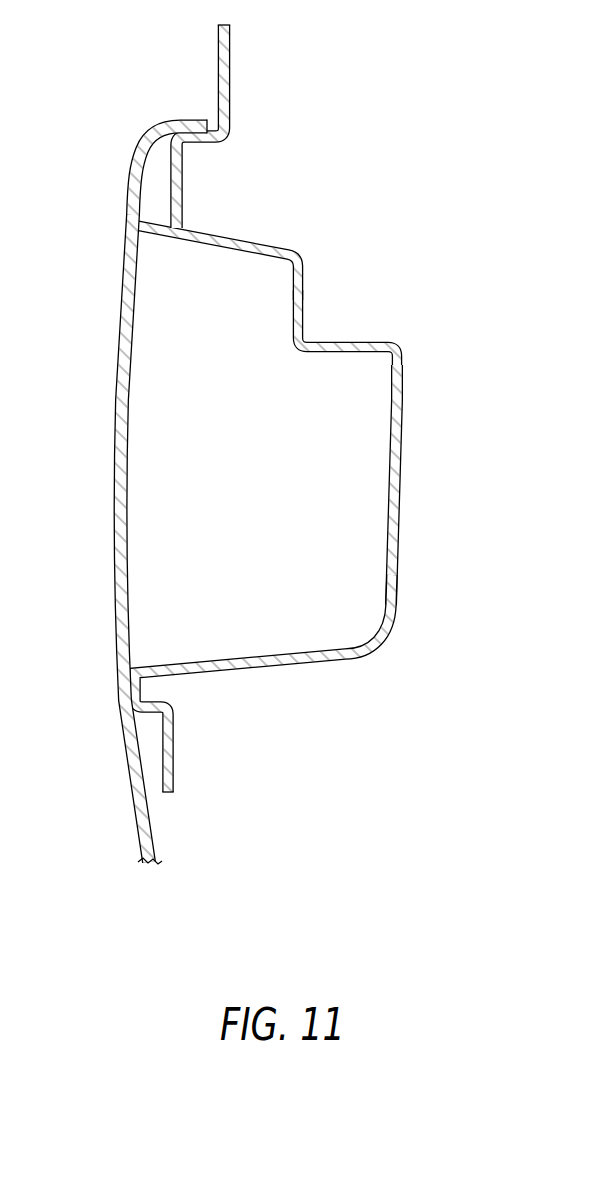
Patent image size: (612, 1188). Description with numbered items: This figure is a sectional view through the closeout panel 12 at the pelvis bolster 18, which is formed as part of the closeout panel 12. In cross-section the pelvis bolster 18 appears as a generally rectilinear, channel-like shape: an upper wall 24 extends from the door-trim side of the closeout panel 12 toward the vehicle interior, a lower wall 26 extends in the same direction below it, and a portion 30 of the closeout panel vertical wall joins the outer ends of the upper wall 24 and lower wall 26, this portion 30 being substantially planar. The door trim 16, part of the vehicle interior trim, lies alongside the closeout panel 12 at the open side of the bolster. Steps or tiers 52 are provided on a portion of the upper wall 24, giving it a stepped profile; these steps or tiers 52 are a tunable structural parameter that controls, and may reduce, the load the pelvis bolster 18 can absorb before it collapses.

The closeout panel 12 is at (282, 444).
The door trim 16 is at (115, 408).
The pelvis bolster 18 is at (328, 477).
The upper wall 24 is at (247, 241).
The lower wall 26 is at (285, 660).
The portion of vertical wall 30 is at (403, 487).
The steps or tiers 52 is at (354, 296).